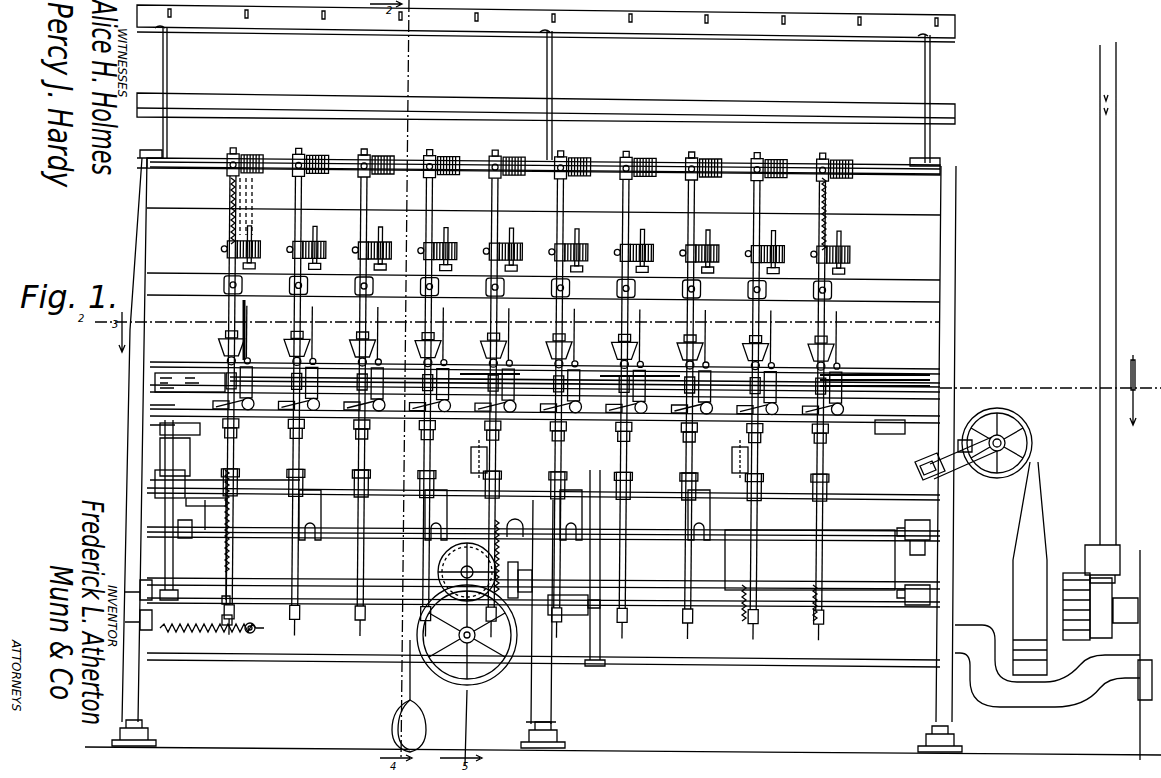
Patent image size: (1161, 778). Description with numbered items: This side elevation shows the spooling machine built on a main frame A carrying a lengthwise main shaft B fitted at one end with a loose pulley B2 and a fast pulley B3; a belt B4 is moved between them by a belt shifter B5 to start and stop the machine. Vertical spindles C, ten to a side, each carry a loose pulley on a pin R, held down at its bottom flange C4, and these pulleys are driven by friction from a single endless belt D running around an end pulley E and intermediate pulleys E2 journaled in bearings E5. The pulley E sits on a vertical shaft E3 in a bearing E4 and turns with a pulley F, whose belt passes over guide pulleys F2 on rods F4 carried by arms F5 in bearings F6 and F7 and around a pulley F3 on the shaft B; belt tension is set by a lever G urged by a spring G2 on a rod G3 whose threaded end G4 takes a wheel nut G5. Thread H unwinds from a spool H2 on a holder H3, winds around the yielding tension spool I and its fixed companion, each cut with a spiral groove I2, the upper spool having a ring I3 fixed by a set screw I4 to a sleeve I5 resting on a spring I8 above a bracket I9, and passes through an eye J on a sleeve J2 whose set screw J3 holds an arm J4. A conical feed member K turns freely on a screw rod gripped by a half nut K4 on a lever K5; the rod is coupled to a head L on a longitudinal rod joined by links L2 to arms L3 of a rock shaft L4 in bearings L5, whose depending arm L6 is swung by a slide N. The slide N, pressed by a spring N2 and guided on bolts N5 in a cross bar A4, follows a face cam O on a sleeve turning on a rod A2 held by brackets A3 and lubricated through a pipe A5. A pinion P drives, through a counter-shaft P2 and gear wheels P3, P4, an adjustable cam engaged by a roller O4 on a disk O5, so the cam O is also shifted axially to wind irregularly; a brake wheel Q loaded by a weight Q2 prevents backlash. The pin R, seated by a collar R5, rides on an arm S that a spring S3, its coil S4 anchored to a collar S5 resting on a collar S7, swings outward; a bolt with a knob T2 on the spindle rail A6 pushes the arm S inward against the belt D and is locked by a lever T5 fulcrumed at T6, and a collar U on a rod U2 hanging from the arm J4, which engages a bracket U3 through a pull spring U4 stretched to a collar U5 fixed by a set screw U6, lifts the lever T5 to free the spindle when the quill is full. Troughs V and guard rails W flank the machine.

The main frame A is at (135, 466).
The frame bracket A2 is at (445, 565).
The frame bracket A3 is at (485, 680).
The frame bracket A4 is at (545, 580).
The frame bracket A5 is at (450, 540).
The frame rail A6 is at (150, 409).
The driving shaft B is at (805, 600).
The driving pulley B2 is at (1078, 640).
The belt guard pipe B3 is at (1110, 660).
The driving belt B4 is at (1110, 212).
The belt bracket B5 is at (1100, 540).
The spindle C is at (485, 318).
The spindle rail C4 is at (275, 390).
The beam D is at (155, 385).
The bar E is at (885, 375).
The bar support E2 is at (525, 385).
The bar guide E3 is at (230, 376).
The bar bracket E4 is at (200, 433).
The bar lug E5 is at (330, 428).
The lever F is at (812, 440).
The fly wheel F2 is at (1028, 432).
The belt F3 is at (1020, 560).
The crank pin F4 is at (1002, 470).
The connecting rod F5 is at (960, 470).
The rod bearing F6 is at (935, 490).
The rod guide F7 is at (960, 440).
The lever G is at (240, 446).
The lever link G2 is at (235, 640).
The lever rod G3 is at (340, 640).
The lever arm G4 is at (570, 635).
The lever pivot G5 is at (560, 640).
The thread guide H is at (248, 208).
The guide bracket H2 is at (252, 238).
The guide post H3 is at (318, 238).
The bobbin I is at (545, 390).
The bobbin spool I2 is at (315, 160).
The bobbin bearing I3 is at (228, 176).
The bobbin knob I4 is at (228, 160).
The bobbin shaft I5 is at (362, 174).
The spring I8 is at (297, 180).
The spring stop I9 is at (228, 255).
The funnel guide J is at (252, 342).
The funnel support J2 is at (265, 345).
The funnel arm J3 is at (312, 378).
The funnel arm J4 is at (440, 380).
The rod K is at (320, 343).
The rod guide K4 is at (425, 352).
The rod arm K5 is at (500, 345).
The slide block L is at (320, 490).
The slide guide L2 is at (305, 500).
The slide bracket L3 is at (308, 540).
The slide arm L4 is at (625, 540).
The slide stop L5 is at (165, 518).
The slide lug L6 is at (458, 505).
The clutch N is at (565, 608).
The clutch rod N2 is at (560, 540).
The clutch arm N5 is at (610, 548).
The shaft O is at (440, 575).
The shaft collar O4 is at (406, 550).
The shaft bearing O5 is at (370, 568).
The hand wheel P is at (545, 560).
The wheel arm P2 is at (400, 672).
The gear P3 is at (463, 680).
The gear shaft P4 is at (365, 620).
The weight cord Q is at (395, 660).
The weight Q2 is at (392, 728).
The roller R is at (245, 420).
The roller bracket R5 is at (585, 430).
The lever S is at (555, 405).
The lever pivot S3 is at (385, 440).
The lever link S4 is at (470, 440).
The lever stop S5 is at (495, 430).
The lever spring S7 is at (770, 440).
The cam T2 is at (890, 326).
The cam lever T5 is at (205, 495).
The cam roller T6 is at (300, 432).
The rod U is at (250, 460).
The rod collar U2 is at (238, 600).
The rod bracket U3 is at (564, 479).
The spring rod U4 is at (230, 580).
The spring U5 is at (225, 620).
The spring collar U6 is at (235, 600).
The bracket V is at (175, 472).
The plate W is at (810, 560).